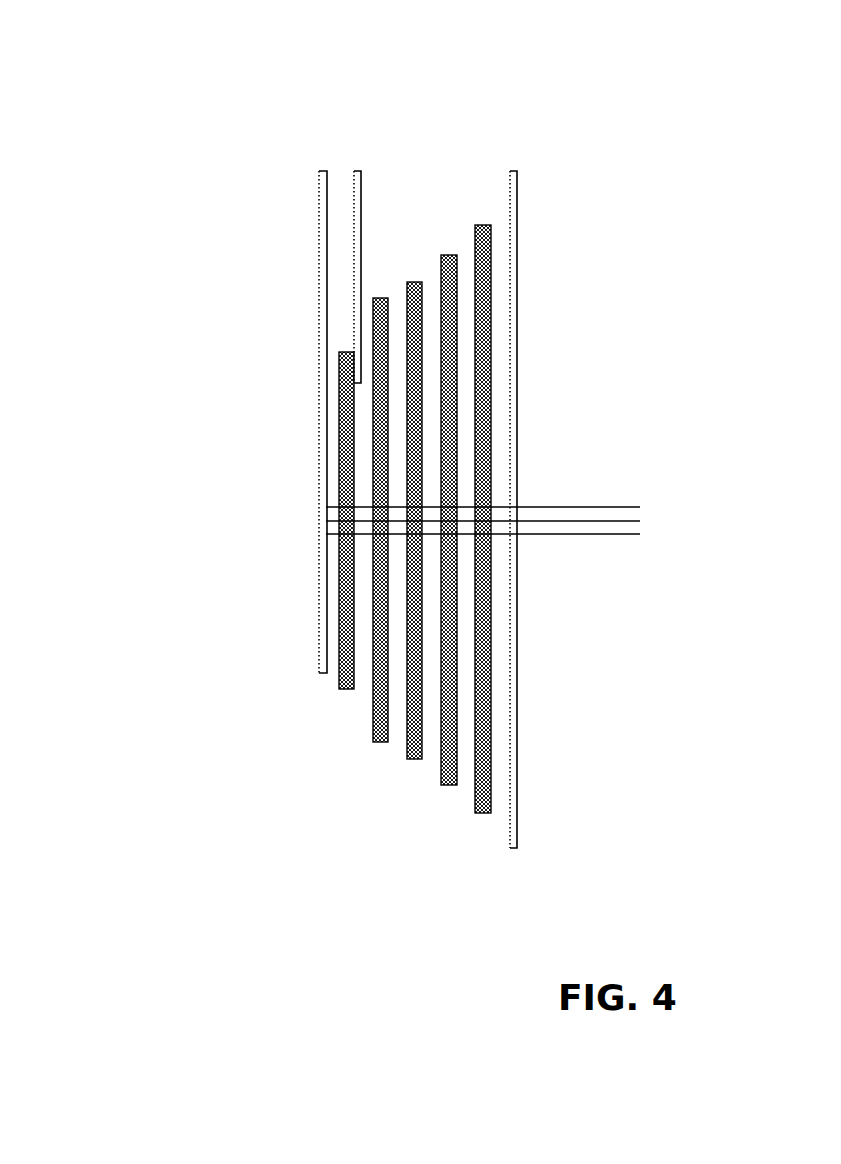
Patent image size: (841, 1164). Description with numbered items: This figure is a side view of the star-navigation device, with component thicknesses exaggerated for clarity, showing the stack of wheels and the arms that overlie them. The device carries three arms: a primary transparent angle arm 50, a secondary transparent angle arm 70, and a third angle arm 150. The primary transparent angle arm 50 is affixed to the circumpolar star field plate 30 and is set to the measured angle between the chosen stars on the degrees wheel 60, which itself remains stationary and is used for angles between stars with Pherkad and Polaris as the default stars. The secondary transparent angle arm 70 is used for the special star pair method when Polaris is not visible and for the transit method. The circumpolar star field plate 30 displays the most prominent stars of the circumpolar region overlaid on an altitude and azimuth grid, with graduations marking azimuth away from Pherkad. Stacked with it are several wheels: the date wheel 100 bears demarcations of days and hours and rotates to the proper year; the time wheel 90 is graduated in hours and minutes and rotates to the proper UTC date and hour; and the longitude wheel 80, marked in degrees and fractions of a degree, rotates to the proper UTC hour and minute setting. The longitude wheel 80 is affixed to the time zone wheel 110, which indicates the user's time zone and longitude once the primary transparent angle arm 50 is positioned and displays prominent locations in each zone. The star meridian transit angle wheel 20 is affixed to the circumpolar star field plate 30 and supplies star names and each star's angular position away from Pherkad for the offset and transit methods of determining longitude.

The secondary transparent angle arm 70 is at (305, 193).
The primary transparent angle arm 50 is at (380, 193).
The third angle arm 150 is at (522, 362).
The circumpolar star field plate 30 is at (333, 693).
The longitude wheel 80 is at (367, 747).
The time wheel 90 is at (400, 765).
The date wheel 100 is at (440, 793).
The degrees wheel 60 is at (477, 827).
The star meridian transit angle wheel 20 is at (62, 795).
The time zone wheel 110 is at (102, 865).